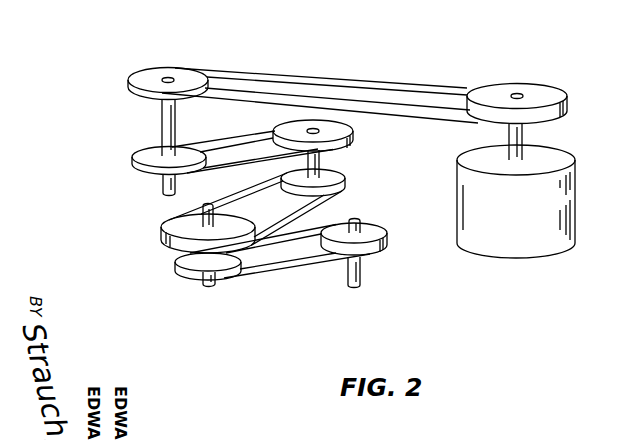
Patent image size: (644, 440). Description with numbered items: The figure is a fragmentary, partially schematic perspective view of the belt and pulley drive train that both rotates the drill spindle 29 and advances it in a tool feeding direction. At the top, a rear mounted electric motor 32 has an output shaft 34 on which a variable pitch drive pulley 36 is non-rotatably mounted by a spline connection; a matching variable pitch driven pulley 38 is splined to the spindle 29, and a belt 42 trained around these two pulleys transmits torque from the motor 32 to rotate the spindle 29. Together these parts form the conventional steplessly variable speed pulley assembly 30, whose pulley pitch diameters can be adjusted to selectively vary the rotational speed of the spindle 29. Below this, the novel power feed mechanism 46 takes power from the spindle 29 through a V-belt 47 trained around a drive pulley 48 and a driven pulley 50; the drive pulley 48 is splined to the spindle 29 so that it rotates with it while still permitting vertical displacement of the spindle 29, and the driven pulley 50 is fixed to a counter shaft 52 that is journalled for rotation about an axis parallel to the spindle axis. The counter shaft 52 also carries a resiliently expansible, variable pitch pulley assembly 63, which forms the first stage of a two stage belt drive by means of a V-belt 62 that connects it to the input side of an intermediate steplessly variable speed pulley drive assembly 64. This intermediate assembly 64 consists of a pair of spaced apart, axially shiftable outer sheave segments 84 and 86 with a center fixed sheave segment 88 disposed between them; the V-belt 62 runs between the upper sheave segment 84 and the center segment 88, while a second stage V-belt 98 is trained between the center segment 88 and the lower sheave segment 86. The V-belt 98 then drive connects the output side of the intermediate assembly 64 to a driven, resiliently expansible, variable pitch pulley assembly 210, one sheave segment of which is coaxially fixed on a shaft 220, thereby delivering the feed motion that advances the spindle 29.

The spindle 29 is at (163, 128).
The steplessly variable speed pulley assembly 30 is at (427, 70).
The electric motor 32 is at (525, 221).
The output shaft 34 is at (522, 130).
The variable pitch drive pulley 36 is at (548, 97).
The variable pitch driven pulley 38 is at (150, 76).
The belt 42 is at (358, 80).
The power feed mechanism 46 is at (225, 197).
The V-belt 47 is at (228, 134).
The drive pulley 48 is at (138, 155).
The driven pulley 50 is at (347, 132).
The counter shaft 52 is at (322, 164).
The V-belt 62 is at (308, 208).
The variable pitch pulley assembly 63 is at (305, 182).
The intermediate steplessly variable speed pulley drive assembly 64 is at (195, 291).
The outer sheave segment 84 is at (147, 230).
The outer sheave segment 86 is at (190, 271).
The center fixed sheave segment 88 is at (157, 253).
The V-belt 98 is at (292, 263).
The driven variable pitch pulley assembly 210 is at (388, 229).
The shaft 220 is at (362, 273).